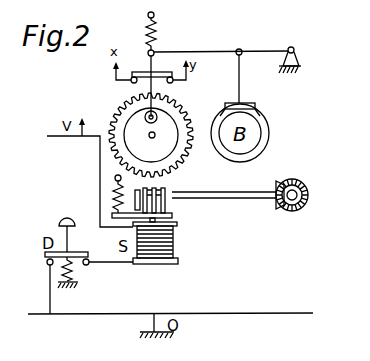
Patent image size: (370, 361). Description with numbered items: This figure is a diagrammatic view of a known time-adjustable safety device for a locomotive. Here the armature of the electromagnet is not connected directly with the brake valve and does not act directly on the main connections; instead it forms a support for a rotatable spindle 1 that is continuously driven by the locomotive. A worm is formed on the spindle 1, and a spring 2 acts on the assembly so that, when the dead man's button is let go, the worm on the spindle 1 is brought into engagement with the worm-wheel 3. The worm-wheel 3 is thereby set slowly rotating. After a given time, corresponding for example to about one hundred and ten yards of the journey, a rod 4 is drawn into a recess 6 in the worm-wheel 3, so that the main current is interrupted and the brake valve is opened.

The rotatable spindle 1 is at (212, 195).
The spring 2 is at (118, 195).
The worm-wheel 3 is at (183, 165).
The rod 4 is at (162, 83).
The recess 6 is at (151, 163).